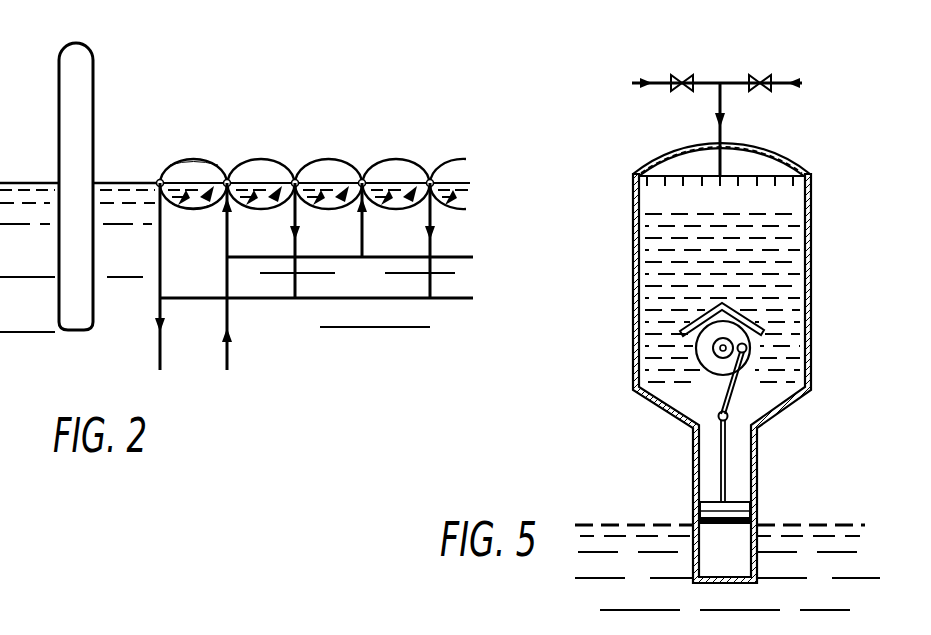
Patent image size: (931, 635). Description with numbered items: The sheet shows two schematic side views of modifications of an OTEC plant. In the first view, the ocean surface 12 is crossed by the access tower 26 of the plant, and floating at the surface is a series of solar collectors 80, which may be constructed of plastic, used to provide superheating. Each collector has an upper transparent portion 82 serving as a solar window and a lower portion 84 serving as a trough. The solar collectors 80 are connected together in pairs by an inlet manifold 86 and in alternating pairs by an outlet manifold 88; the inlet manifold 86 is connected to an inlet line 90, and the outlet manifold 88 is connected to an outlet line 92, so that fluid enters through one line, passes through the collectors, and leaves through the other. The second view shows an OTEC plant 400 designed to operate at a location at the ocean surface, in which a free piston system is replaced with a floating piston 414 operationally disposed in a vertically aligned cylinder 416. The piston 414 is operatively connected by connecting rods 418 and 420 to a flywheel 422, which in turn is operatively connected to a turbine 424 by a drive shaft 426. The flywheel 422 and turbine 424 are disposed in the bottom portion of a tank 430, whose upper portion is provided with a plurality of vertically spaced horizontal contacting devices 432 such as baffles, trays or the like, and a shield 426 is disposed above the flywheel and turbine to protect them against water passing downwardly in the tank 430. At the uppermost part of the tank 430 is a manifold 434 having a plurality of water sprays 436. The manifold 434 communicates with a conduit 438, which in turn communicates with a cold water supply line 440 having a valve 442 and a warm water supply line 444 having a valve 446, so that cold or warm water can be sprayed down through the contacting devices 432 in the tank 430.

In FIG. 2, the ocean surface 12 is at (104, 190).
In FIG. 2, the access tower 26 is at (93, 93).
In FIG. 2, the solar collectors 80 is at (214, 128).
In FIG. 2, the upper transparent portion 82 is at (196, 161).
In FIG. 2, the lower portion 84 is at (177, 207).
In FIG. 2, the inlet manifold 86 is at (230, 172).
In FIG. 2, the outlet manifold 88 is at (159, 180).
In FIG. 2, the inlet line 90 is at (231, 348).
In FIG. 2, the outlet line 92 is at (163, 348).
In FIG. 5, the OTEC plant 400 is at (592, 358).
In FIG. 5, the floating piston 414 is at (754, 503).
In FIG. 5, the cylinder 416 is at (738, 457).
In FIG. 5, the connecting rod 418 is at (716, 446).
In FIG. 5, the connecting rod 420 is at (732, 389).
In FIG. 5, the flywheel 422 is at (720, 355).
In FIG. 5, the turbine 424 is at (744, 355).
In FIG. 5, the shield 426 is at (690, 320).
In FIG. 5, the tank 430 is at (811, 209).
In FIG. 5, the contacting devices 432 is at (665, 252).
In FIG. 5, the manifold 434 is at (666, 163).
In FIG. 5, the water sprays 436 is at (665, 179).
In FIG. 5, the conduit 438 is at (722, 131).
In FIG. 5, the cold water supply line 440 is at (790, 80).
In FIG. 5, the valve 442 is at (760, 74).
In FIG. 5, the warm water supply line 444 is at (650, 80).
In FIG. 5, the valve 446 is at (682, 74).